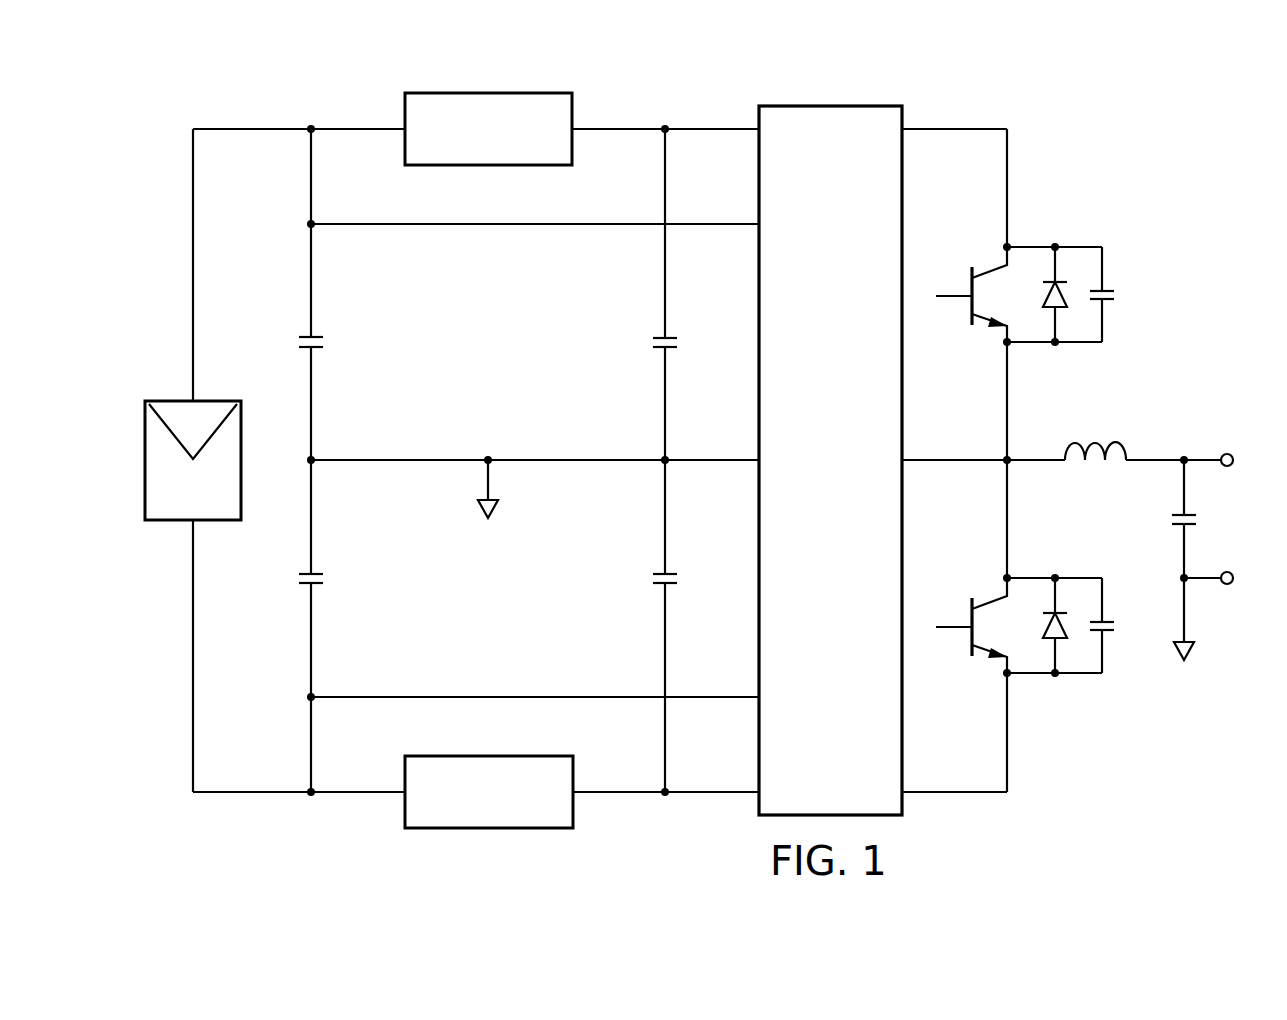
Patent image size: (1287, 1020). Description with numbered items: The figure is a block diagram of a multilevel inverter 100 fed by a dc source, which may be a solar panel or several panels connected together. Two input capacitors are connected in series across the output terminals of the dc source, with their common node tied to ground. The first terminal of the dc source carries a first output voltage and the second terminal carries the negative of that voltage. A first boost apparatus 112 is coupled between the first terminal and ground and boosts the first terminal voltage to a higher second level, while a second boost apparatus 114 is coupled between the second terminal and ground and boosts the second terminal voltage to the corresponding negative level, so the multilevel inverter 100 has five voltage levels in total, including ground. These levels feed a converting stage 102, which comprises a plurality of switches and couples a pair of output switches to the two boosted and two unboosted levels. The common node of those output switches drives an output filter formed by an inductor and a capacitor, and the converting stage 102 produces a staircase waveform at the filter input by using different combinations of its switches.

The multilevel inverter 100 is at (1086, 136).
The converting stage 102 is at (809, 477).
The first boost apparatus 112 is at (489, 93).
The second boost apparatus 114 is at (488, 828).